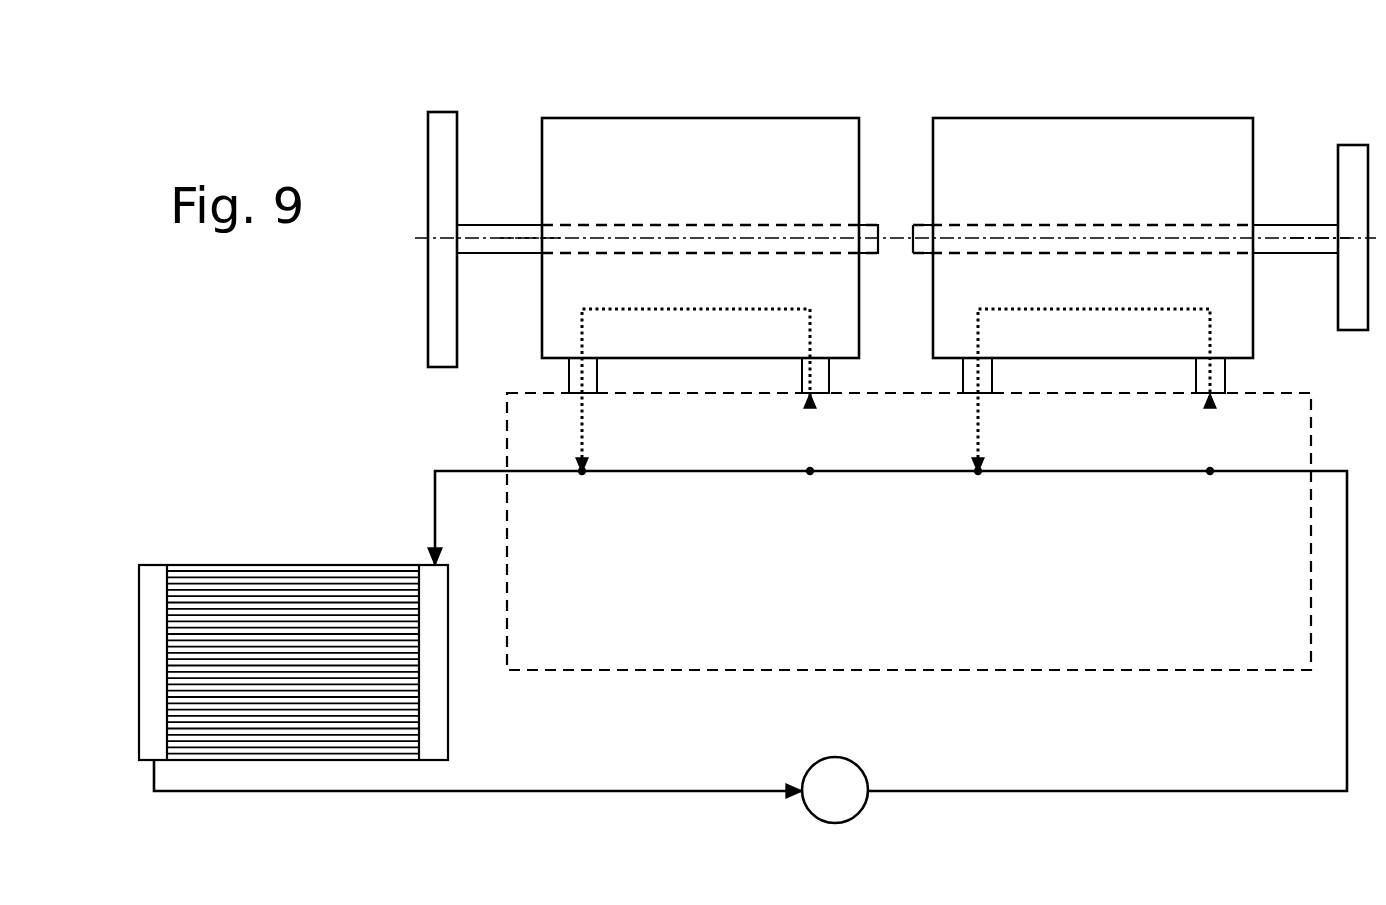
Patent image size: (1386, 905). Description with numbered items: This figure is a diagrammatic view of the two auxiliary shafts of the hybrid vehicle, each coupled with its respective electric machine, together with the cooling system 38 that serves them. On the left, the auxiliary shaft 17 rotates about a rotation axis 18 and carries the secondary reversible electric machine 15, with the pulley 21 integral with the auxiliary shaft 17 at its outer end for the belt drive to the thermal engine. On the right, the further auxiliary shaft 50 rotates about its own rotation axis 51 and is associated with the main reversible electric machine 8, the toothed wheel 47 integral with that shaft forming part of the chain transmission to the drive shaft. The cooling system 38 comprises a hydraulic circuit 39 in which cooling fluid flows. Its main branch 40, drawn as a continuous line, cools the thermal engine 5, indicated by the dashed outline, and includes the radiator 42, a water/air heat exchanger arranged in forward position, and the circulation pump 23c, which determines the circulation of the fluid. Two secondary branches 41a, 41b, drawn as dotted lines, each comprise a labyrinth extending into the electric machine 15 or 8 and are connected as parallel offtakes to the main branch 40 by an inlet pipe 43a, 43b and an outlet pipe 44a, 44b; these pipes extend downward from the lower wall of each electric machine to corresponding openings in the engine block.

The internal combustion thermal engine 5 is at (1128, 645).
The main reversible electric machine 8 is at (1211, 147).
The secondary reversible electric machine 15 is at (818, 147).
The auxiliary shaft 17 is at (477, 247).
The rotation axis 18 is at (525, 237).
The pulley 21 is at (443, 141).
The circulation pump 23c is at (835, 790).
The cooling system 38 is at (278, 390).
The hydraulic circuit 39 is at (452, 443).
The main branch 40 is at (922, 473).
The secondary branch 41a is at (720, 307).
The secondary branch 41b is at (1114, 307).
The radiator 42 is at (252, 602).
The inlet pipe 43a is at (826, 383).
The inlet pipe 43b is at (1225, 383).
The outlet pipe 44a is at (578, 376).
The outlet pipe 44b is at (988, 388).
The toothed wheel 47 is at (1352, 333).
The further auxiliary shaft 50 is at (1272, 247).
The rotation axis 51 is at (1322, 237).